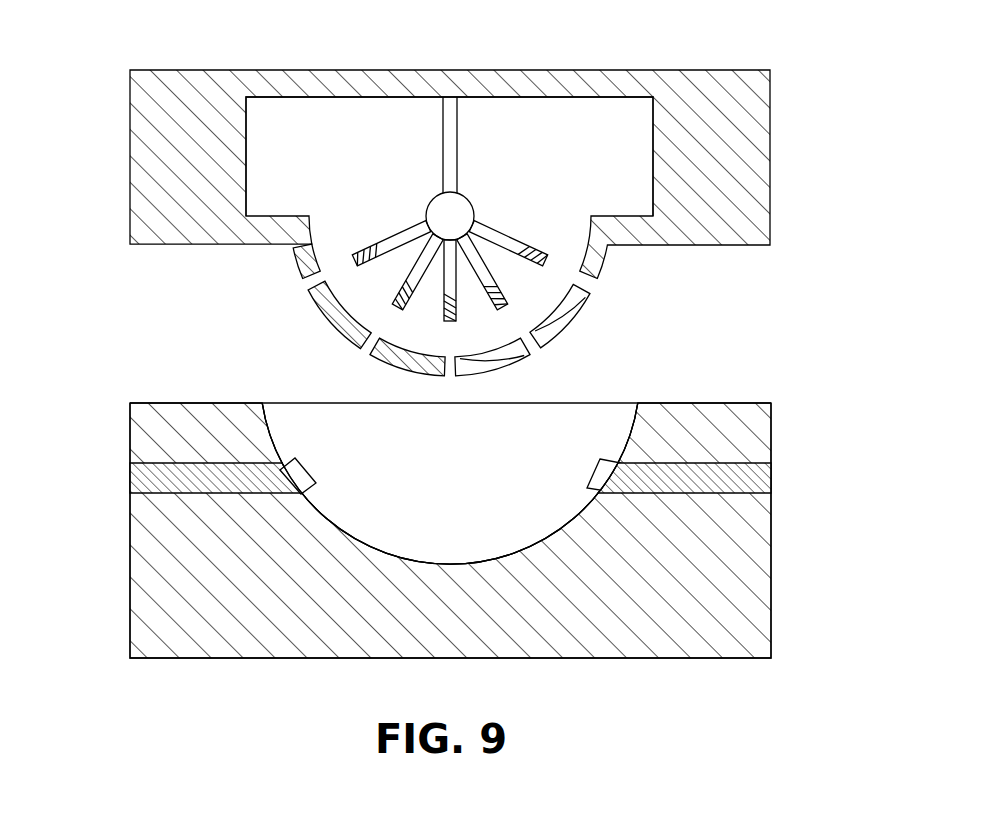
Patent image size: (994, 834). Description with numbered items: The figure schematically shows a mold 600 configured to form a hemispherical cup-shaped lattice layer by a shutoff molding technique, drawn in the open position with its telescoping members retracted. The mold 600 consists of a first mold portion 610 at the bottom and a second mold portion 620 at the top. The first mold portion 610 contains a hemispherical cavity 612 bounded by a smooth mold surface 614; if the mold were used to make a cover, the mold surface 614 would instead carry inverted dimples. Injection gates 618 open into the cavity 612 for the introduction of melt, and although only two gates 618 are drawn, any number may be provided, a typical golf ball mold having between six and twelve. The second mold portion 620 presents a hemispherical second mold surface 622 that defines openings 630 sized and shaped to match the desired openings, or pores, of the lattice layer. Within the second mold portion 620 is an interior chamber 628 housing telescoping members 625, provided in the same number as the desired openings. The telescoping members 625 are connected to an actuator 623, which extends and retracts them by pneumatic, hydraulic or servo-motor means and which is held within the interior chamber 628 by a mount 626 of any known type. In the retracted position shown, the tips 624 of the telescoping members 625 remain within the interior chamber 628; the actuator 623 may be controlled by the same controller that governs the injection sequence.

The mold 600 is at (94, 611).
The first mold portion 610 is at (772, 590).
The hemispherical cavity 612 is at (424, 528).
The mold surface 614 is at (329, 522).
The injection gates 618 is at (128, 474).
The second mold portion 620 is at (639, 70).
The second mold surface 622 is at (589, 302).
The actuator 623 is at (458, 208).
The tips 624 is at (396, 311).
The telescoping members 625 is at (352, 266).
The mount 626 is at (455, 143).
The interior chamber 628 is at (566, 143).
The openings 630 is at (364, 354).